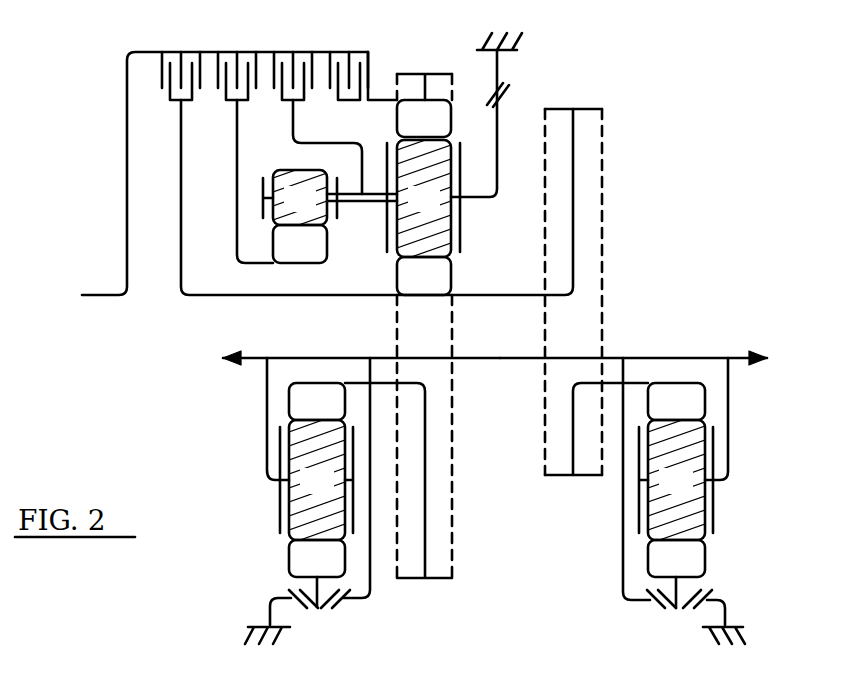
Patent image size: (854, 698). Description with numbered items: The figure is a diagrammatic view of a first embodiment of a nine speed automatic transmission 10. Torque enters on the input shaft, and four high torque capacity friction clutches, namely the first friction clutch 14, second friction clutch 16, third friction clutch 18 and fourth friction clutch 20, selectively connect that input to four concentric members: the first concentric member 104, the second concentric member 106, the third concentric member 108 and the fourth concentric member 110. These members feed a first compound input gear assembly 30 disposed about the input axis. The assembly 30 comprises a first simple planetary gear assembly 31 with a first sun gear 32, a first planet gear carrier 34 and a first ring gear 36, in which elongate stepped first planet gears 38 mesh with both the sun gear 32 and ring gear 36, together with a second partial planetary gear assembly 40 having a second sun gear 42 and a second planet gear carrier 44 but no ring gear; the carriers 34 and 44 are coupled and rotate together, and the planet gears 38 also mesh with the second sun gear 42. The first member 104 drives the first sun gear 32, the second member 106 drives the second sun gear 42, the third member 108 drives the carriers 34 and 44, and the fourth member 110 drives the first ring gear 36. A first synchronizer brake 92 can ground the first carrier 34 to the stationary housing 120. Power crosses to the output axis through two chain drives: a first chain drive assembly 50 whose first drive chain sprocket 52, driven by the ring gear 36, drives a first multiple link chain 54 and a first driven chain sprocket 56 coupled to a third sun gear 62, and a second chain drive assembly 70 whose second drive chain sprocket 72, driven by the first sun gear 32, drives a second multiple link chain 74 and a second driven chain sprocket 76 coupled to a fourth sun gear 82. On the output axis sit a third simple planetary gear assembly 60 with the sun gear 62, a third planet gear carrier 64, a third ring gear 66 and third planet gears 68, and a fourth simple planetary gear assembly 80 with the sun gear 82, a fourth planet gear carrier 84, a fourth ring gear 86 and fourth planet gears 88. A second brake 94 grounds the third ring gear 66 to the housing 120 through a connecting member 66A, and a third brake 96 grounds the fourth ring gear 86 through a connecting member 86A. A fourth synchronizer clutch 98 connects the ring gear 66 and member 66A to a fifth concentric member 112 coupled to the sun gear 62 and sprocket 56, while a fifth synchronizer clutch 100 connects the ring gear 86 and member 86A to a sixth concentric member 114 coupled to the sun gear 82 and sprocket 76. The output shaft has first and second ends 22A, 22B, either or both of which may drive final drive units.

The nine speed automatic transmission 10 is at (673, 176).
The first high torque capacity friction clutch 14 is at (179, 73).
The second high torque capacity friction clutch 16 is at (235, 73).
The third high torque capacity friction clutch 18 is at (291, 73).
The fourth high torque capacity friction clutch 20 is at (347, 73).
The first end of output shaft 22A is at (254, 364).
The second end of output shaft 22B is at (740, 353).
The first compound input gear assembly 30 is at (159, 324).
The first simple planetary gear assembly 31 is at (396, 221).
The first sun gear 32 is at (419, 301).
The first planet gear carrier 34 is at (464, 218).
The first ring gear 36 is at (414, 131).
The first planet gears 38 is at (289, 210).
The second partial planetary gear assembly 40 is at (353, 237).
The second sun gear 42 is at (300, 244).
The second planet gear carrier 44 is at (263, 205).
The first chain drive assembly 50 is at (432, 481).
The first drive chain sprocket 52 is at (437, 73).
The first multiple link chain 54 is at (455, 348).
The first driven chain sprocket 56 is at (453, 580).
The third simple planetary gear assembly 60 is at (282, 513).
The third sun gear 62 is at (306, 415).
The third planet gear carrier 64 is at (280, 492).
The third ring gear 66 is at (306, 571).
The connecting member 66A is at (313, 593).
The third planet gears 68 is at (306, 493).
The second chain drive assembly 70 is at (593, 272).
The second drive chain sprocket 72 is at (587, 108).
The second multiple link chain 74 is at (605, 251).
The second driven chain sprocket 76 is at (562, 478).
The fourth simple planetary gear assembly 80 is at (686, 501).
The fourth sun gear 82 is at (665, 415).
The fourth planet gear carrier 84 is at (716, 437).
The fourth ring gear 86 is at (665, 571).
The connecting member 86A is at (678, 594).
The fourth planet gears 88 is at (665, 493).
The first synchronizer clutch (brake) 92 is at (503, 93).
The second synchronizer clutch (brake) 94 is at (293, 598).
The third synchronizer clutch (brake) 96 is at (699, 598).
The fourth synchronizer clutch 98 is at (335, 605).
The fifth synchronizer clutch 100 is at (655, 605).
The first shaft, quill or concentric member 104 is at (178, 122).
The second shaft, quill or concentric member 106 is at (236, 113).
The third shaft, quill or concentric member 108 is at (292, 117).
The fourth shaft, quill or concentric member 110 is at (381, 100).
The fifth shaft, quill or concentric member 112 is at (372, 555).
The sixth shaft, quill or concentric member 114 is at (620, 558).
The stationary housing 120 is at (752, 632).